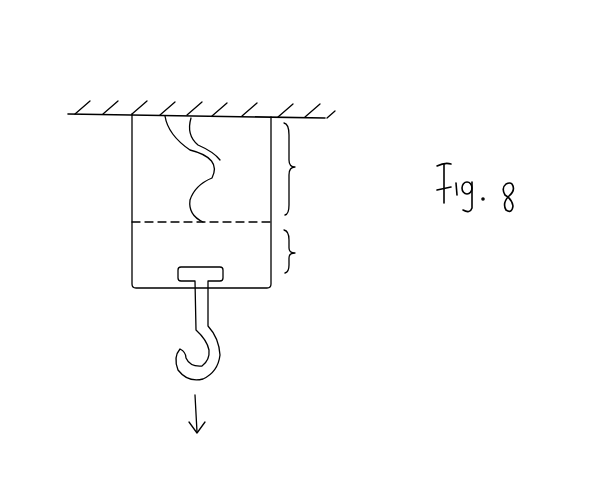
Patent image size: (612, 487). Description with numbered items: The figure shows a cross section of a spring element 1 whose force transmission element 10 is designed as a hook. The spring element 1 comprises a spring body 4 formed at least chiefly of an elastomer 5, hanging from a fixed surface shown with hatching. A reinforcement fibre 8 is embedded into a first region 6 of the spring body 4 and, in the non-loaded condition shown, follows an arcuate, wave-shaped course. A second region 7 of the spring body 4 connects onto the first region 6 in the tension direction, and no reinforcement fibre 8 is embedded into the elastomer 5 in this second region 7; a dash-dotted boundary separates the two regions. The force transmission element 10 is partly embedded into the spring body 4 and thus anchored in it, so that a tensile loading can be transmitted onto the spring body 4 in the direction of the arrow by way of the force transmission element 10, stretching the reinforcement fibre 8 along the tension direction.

The spring element 1 is at (350, 302).
The spring body 4 is at (130, 166).
The elastomer 5 is at (143, 196).
The first region 6 is at (301, 166).
The second region 7 is at (303, 268).
The reinforcement fibre 8 is at (165, 115).
The force transmission element 10 is at (222, 360).